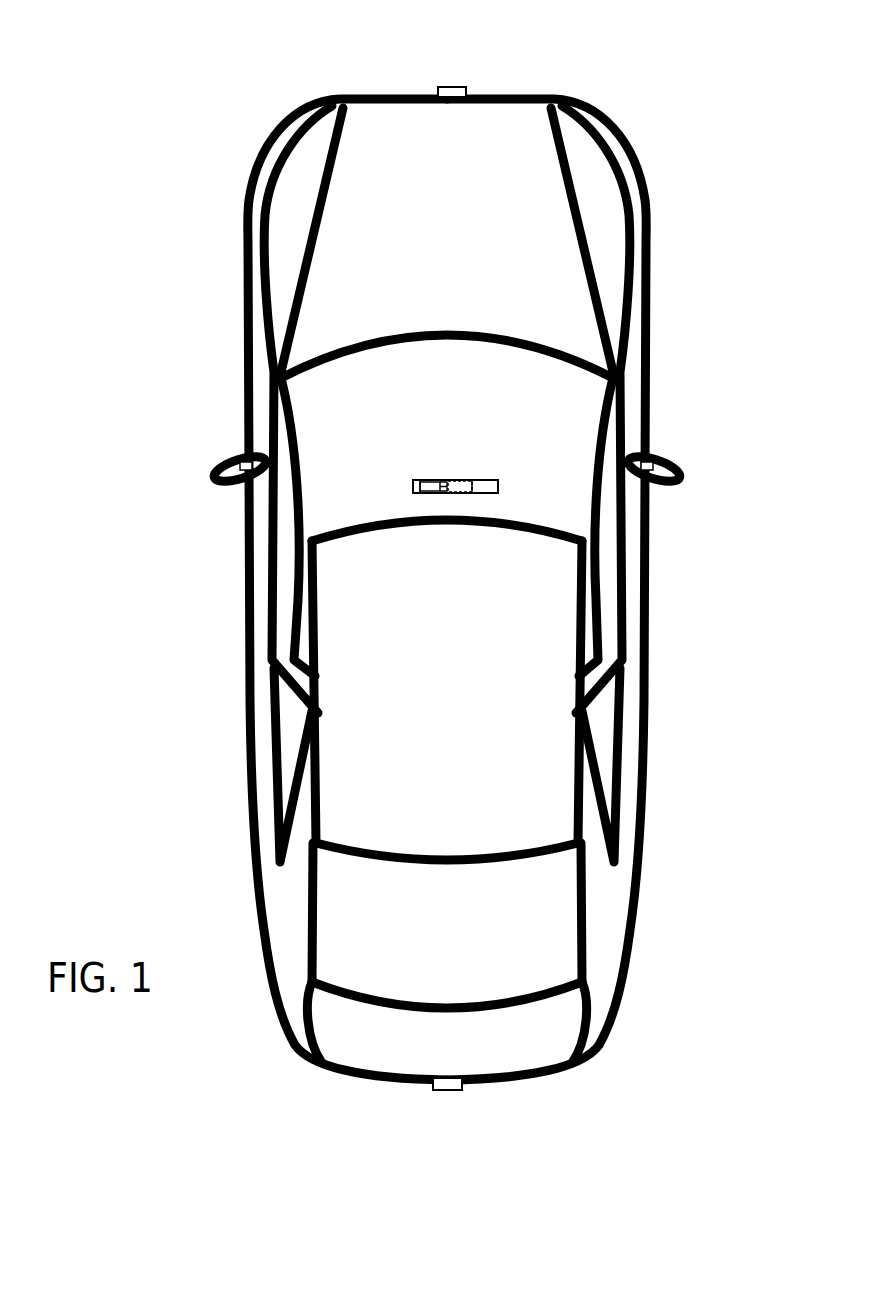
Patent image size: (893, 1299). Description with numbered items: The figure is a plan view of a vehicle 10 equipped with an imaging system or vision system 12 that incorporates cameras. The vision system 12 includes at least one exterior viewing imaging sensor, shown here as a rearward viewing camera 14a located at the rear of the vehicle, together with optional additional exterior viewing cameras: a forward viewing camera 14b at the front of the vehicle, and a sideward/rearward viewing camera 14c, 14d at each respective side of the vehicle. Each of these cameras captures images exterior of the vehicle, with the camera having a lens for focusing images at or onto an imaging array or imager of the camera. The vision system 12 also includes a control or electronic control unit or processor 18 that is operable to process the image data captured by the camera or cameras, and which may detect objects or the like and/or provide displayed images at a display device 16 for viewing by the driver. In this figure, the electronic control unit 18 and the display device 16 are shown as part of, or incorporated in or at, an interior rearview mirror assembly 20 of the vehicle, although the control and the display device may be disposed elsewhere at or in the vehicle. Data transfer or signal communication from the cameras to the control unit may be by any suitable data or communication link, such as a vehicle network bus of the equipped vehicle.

The vehicle 10 is at (188, 183).
The vision system 12 is at (386, 1117).
The rearward viewing camera 14a is at (452, 1088).
The forward viewing camera 14b is at (458, 88).
The sideward/rearward viewing camera 14c is at (240, 464).
The sideward/rearward viewing camera 14d is at (652, 465).
The display device 16 is at (430, 483).
The electronic control unit 18 is at (452, 478).
The interior rearview mirror assembly 20 is at (498, 482).